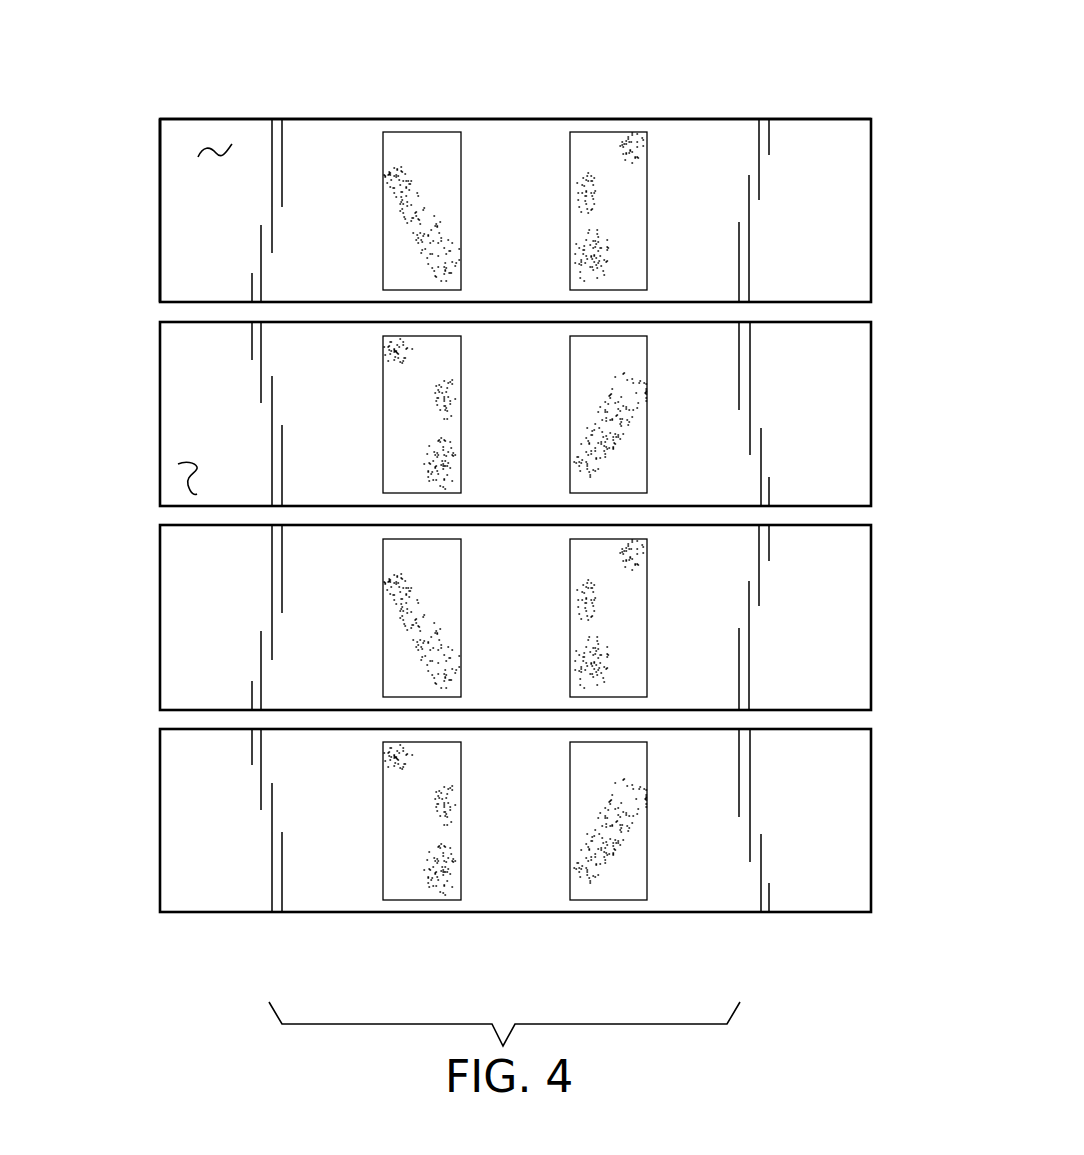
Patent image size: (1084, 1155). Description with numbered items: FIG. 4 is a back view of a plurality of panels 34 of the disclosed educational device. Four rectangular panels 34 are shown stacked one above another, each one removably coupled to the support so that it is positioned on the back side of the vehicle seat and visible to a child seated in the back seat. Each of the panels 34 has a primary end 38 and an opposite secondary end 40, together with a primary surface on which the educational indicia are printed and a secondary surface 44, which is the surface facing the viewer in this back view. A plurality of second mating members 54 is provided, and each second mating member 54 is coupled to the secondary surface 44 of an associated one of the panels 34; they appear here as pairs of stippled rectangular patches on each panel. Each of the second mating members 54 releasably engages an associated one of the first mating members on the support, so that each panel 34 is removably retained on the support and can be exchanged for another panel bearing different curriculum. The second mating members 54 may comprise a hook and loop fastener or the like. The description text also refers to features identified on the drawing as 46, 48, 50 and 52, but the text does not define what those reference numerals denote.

The panels 34 is at (158, 278).
The primary end 38 is at (160, 152).
The secondary end 40 is at (871, 215).
The secondary surface 44 is at (219, 150).
The top surface of first layer 46 is at (469, 118).
The second layer 48 is at (871, 405).
The third layer 50 is at (871, 660).
The fourth layer 52 is at (871, 860).
The second mating members 54 is at (602, 165).